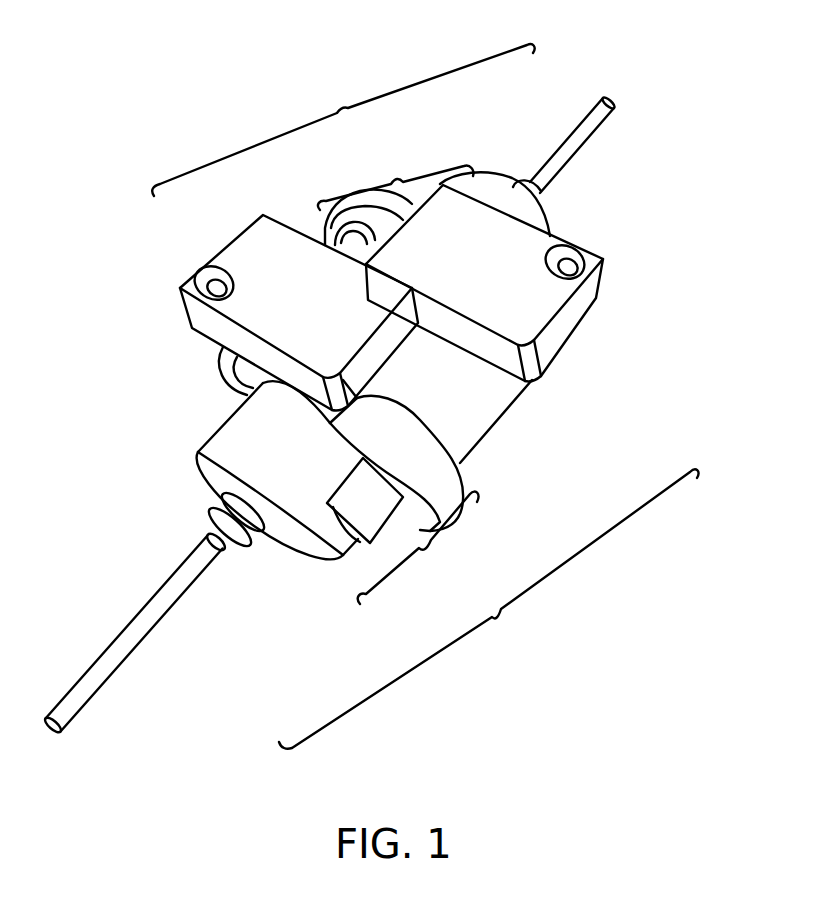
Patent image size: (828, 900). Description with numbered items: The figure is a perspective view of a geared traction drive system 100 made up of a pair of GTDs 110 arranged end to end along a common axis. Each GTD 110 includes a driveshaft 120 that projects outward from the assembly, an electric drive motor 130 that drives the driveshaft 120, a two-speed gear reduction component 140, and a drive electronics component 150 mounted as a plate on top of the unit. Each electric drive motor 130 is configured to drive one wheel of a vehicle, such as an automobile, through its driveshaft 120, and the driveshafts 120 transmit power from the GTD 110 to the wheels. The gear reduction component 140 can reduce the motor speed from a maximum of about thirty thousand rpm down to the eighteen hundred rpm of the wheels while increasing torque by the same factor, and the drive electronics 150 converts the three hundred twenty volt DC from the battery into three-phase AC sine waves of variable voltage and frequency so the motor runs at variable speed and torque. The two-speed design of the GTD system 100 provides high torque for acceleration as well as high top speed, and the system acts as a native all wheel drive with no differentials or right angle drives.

The geared traction drive (GTD) system 100 is at (589, 70).
The GTD 110 is at (341, 107).
The driveshaft 120 is at (552, 163).
The electric drive motor (EDM) 130 is at (325, 229).
The 2-speed gear reduction component 140 is at (397, 175).
The drive electronics component 150 is at (243, 250).